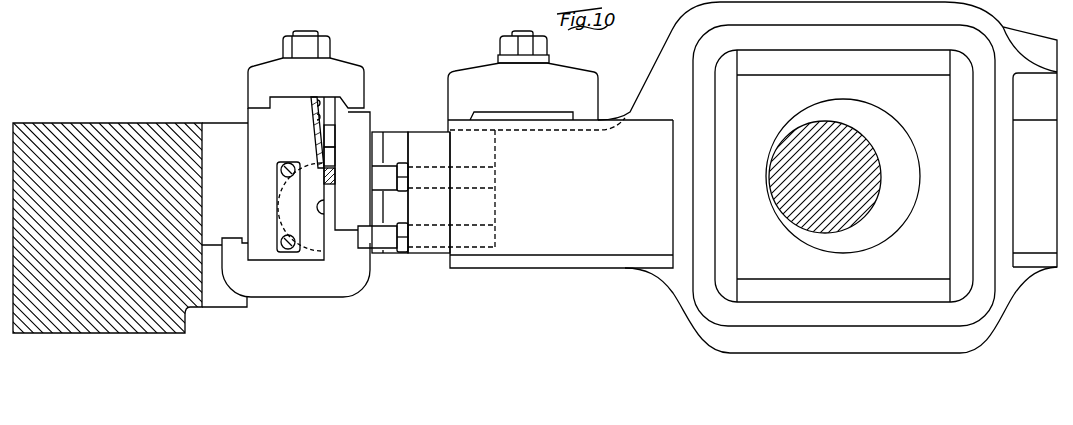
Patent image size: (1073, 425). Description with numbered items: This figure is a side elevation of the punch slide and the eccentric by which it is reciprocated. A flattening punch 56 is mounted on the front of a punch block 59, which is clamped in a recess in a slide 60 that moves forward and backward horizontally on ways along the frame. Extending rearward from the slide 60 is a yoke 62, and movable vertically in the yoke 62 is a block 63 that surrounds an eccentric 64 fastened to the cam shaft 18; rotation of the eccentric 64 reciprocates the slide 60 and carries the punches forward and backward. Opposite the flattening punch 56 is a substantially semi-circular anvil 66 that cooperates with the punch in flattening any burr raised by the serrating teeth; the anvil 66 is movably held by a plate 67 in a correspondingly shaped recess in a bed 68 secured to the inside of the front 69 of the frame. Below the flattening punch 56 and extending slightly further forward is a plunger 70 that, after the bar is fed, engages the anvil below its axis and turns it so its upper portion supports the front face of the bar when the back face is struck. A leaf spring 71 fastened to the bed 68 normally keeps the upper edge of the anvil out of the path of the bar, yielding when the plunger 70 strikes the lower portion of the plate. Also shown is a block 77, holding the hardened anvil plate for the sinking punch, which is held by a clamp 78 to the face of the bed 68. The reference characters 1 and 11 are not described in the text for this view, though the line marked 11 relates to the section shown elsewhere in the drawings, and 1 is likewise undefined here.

The spacer 1 is at (335, 174).
The member 11 is at (220, 8).
The cam shaft 18 is at (870, 140).
The flattening punch 56 is at (380, 162).
The punch block 59 is at (429, 192).
The slide 60 is at (540, 190).
The yoke 62 is at (827, 177).
The block 63 is at (843, 176).
The eccentric 64 is at (825, 176).
The anvil 66 is at (318, 225).
The plate 67 is at (277, 203).
The bed 68 is at (291, 178).
The front 69 is at (117, 123).
The plunger 70 is at (362, 245).
The leaf spring 71 is at (312, 128).
The block 77 is at (356, 121).
The clamp 78 is at (306, 69).